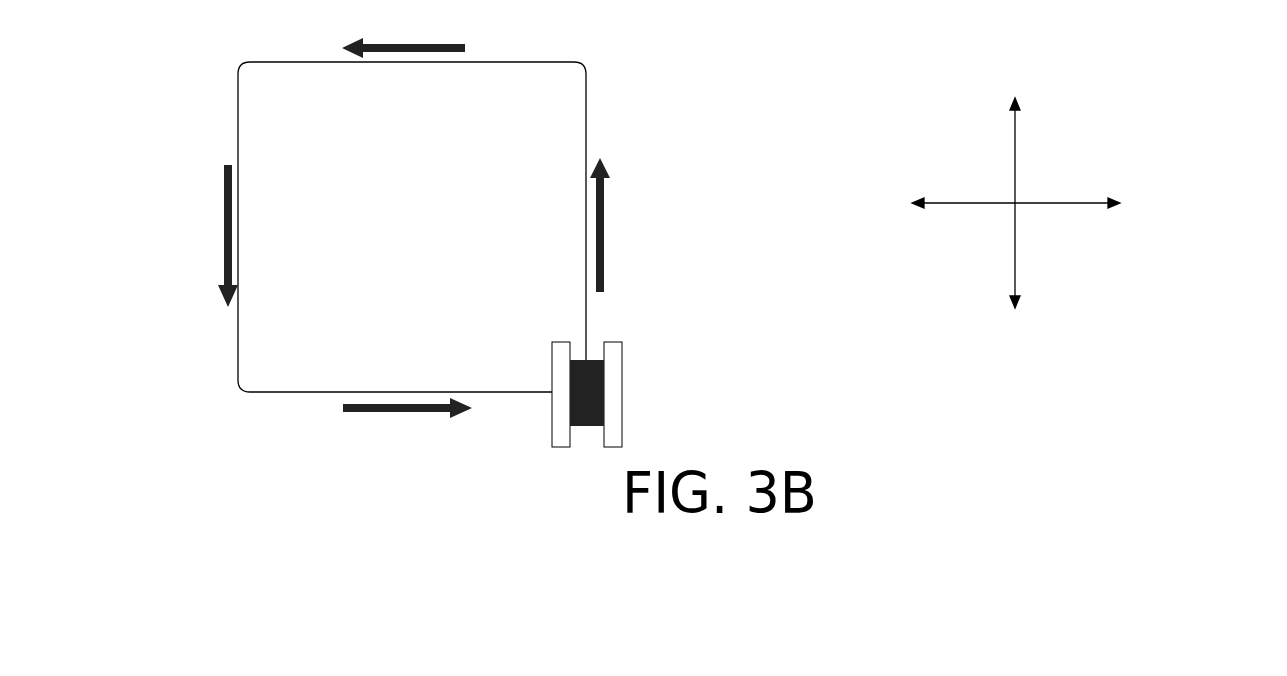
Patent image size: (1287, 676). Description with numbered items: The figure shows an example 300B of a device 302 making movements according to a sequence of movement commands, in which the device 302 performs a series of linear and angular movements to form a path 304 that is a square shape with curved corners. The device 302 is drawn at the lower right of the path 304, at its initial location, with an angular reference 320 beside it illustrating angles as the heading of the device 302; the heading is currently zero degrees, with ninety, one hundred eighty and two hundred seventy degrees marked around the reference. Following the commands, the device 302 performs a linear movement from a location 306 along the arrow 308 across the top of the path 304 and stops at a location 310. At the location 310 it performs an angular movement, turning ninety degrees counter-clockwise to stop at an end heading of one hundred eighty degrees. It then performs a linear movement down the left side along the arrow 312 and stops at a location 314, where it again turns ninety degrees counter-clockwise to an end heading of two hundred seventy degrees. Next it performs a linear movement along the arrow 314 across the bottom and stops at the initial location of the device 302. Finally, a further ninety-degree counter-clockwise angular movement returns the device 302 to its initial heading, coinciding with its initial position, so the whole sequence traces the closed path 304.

The robotic lawnmower travel path example 300B is at (688, 61).
The device 302 is at (622, 385).
The path 304 is at (238, 118).
The location 306 is at (586, 62).
The arrow 308 is at (466, 47).
The location 310 is at (238, 66).
The arrow 312 is at (224, 262).
The location / arrow 314 is at (240, 388).
The angular reference 320 is at (1122, 60).